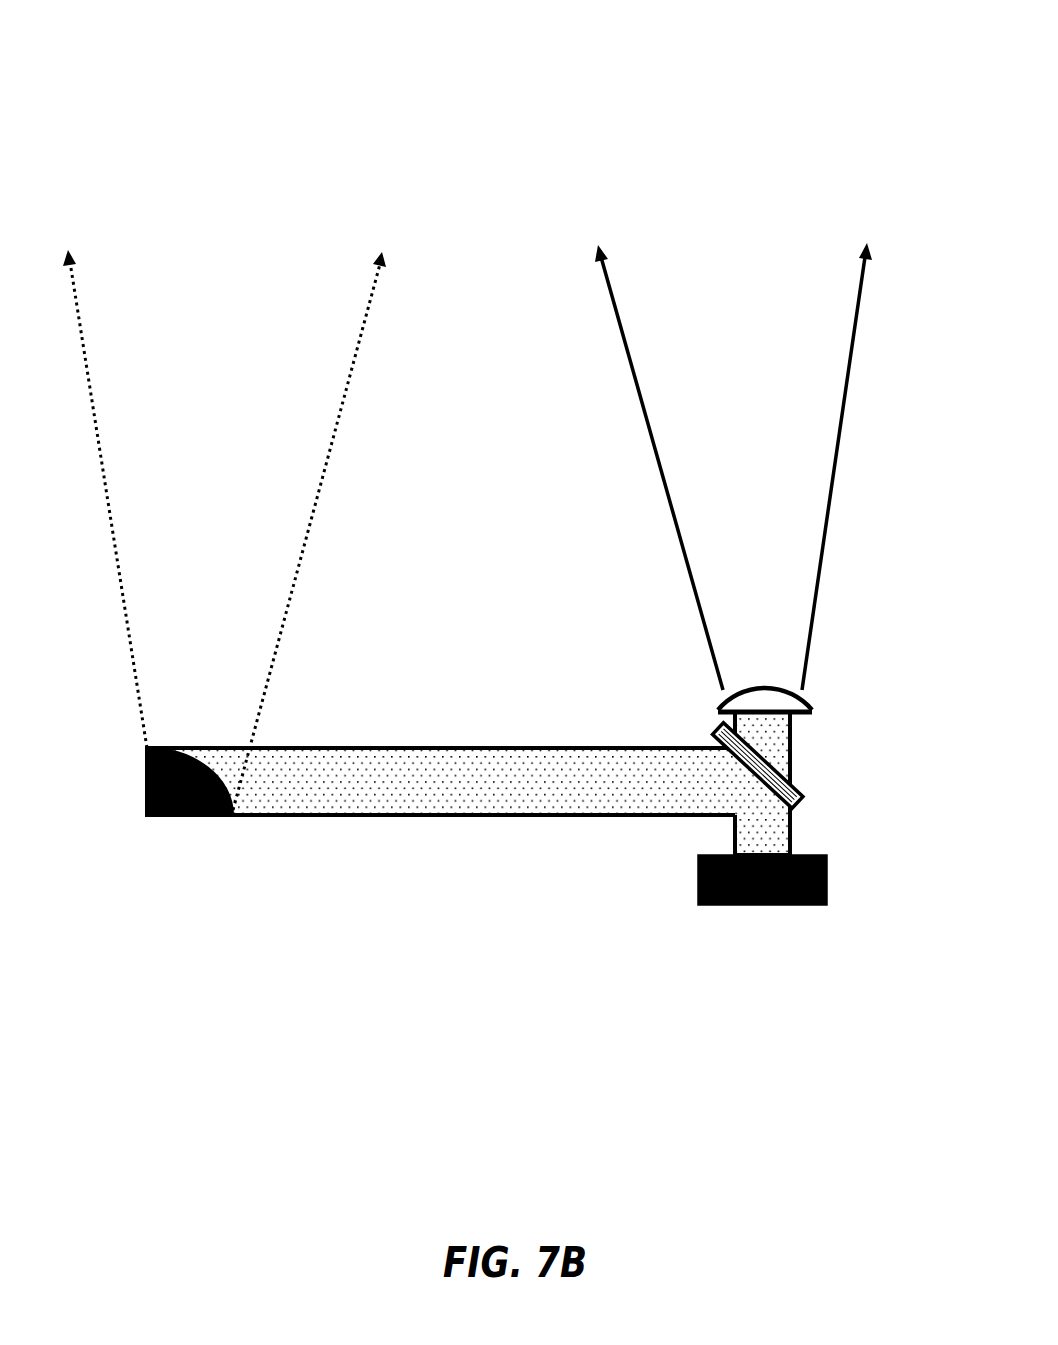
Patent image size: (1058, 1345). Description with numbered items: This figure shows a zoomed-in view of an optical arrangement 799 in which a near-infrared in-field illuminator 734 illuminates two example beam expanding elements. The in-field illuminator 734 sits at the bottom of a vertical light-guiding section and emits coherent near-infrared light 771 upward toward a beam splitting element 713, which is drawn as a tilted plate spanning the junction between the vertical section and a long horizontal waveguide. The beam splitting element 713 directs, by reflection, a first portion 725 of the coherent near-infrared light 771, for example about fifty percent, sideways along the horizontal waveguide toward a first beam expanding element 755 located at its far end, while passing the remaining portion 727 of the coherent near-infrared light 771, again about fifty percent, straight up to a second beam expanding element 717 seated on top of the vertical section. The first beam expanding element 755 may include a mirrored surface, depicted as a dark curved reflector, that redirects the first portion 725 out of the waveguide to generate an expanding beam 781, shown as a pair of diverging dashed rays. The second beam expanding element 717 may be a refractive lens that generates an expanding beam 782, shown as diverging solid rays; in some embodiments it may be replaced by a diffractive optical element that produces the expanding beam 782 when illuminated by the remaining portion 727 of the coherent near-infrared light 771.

The optical arrangement 799 is at (838, 29).
The first portion of coherent near-infrared light 725 is at (485, 797).
The first beam expanding element 755 is at (147, 795).
The remaining portion of coherent near-infrared light 727 is at (749, 741).
The coherent near-infrared light 771 is at (749, 842).
The beam splitting element 713 is at (716, 728).
The second beam expanding element 717 is at (812, 706).
The near-infrared in-field illuminator 734 is at (698, 882).
The expanding beam 781 is at (102, 433).
The expanding beam 782 is at (622, 318).